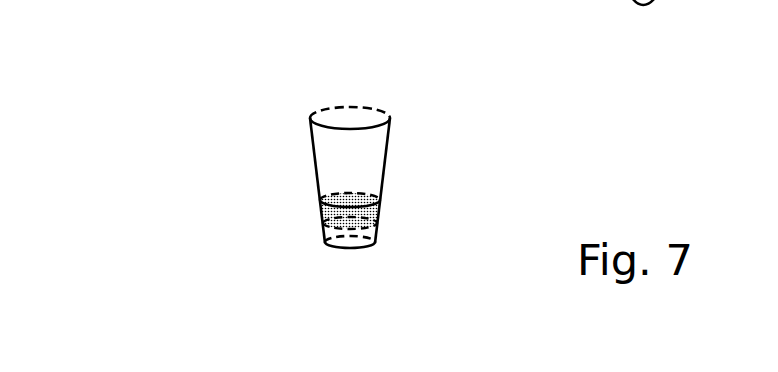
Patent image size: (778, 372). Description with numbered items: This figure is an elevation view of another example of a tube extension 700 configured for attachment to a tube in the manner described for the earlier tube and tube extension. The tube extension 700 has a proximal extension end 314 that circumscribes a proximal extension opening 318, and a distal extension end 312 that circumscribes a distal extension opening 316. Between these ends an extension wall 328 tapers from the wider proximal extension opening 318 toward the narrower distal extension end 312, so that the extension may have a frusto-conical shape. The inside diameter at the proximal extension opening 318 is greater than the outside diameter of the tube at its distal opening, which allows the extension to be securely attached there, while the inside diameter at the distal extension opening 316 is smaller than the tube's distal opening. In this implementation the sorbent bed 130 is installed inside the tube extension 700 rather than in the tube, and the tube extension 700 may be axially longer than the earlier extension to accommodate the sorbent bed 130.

The tube extension 700 is at (142, 142).
The proximal extension end 314 is at (400, 105).
The proximal extension opening 318 is at (311, 119).
The extension wall 328 is at (315, 165).
The sorbent bed 130 is at (378, 217).
The distal extension opening 316 is at (327, 246).
The distal extension end 312 is at (377, 253).